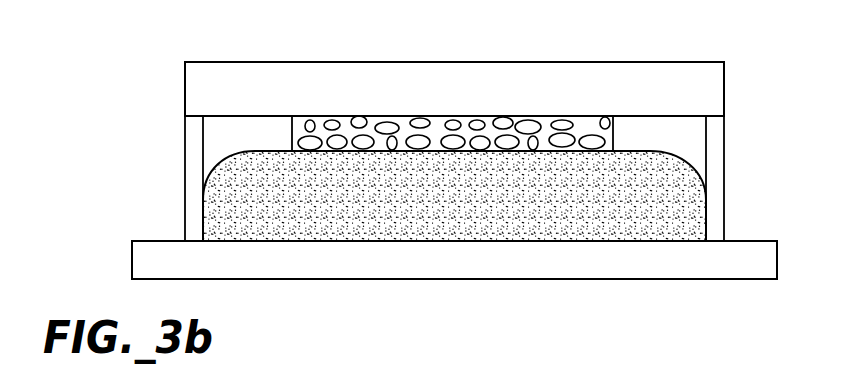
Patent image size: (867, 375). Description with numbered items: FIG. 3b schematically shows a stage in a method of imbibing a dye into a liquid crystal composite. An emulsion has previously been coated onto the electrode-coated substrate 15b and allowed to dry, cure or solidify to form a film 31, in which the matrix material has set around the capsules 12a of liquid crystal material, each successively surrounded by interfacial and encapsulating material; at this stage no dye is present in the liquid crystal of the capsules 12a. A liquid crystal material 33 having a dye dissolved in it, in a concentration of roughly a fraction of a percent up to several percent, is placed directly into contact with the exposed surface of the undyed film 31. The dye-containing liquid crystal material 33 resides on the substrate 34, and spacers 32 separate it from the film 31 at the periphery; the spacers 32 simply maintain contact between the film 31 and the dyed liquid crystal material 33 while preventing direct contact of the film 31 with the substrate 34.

The capsules 12a is at (563, 125).
The electrode-coated substrate 15b is at (653, 62).
The film 31 is at (533, 94).
The spacers 32 is at (185, 143).
The liquid crystal material having a dye dissolved therein 33 is at (687, 227).
The substrate 34 is at (680, 267).